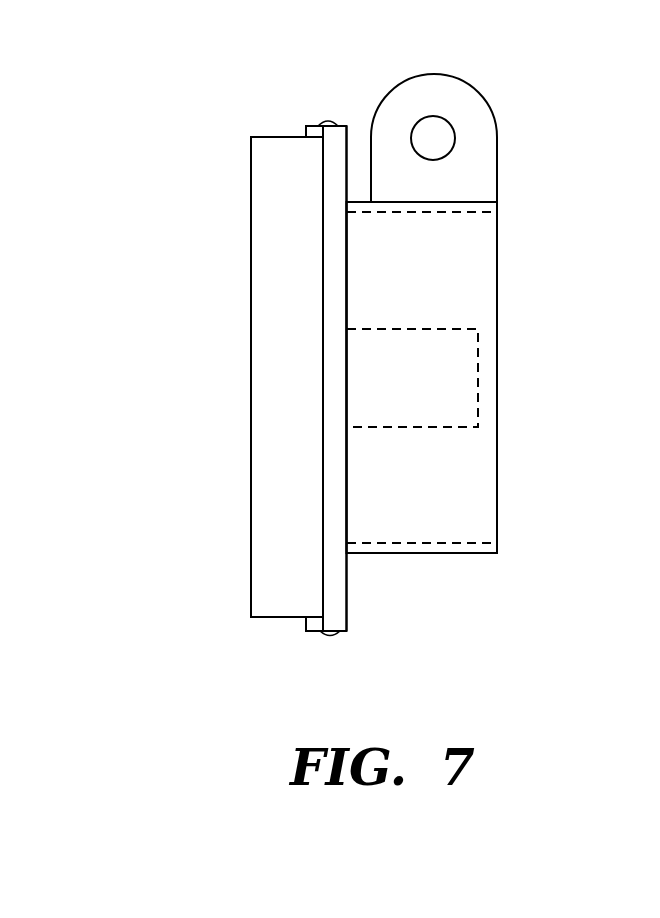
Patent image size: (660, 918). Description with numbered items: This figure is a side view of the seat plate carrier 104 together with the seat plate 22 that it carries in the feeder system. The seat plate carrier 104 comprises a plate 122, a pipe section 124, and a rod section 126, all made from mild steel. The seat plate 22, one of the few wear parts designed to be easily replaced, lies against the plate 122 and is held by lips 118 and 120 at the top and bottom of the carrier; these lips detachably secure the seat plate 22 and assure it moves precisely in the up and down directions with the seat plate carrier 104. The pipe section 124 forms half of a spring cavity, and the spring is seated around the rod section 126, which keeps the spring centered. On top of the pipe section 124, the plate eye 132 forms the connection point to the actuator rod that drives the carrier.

The seat plate 22 is at (272, 362).
The seat plate carrier 104 is at (334, 543).
The lip 118 is at (315, 126).
The lip 120 is at (330, 636).
The plate 122 is at (333, 285).
The pipe section 124 is at (505, 549).
The rod section 126 is at (460, 390).
The plate eye 132 is at (468, 98).